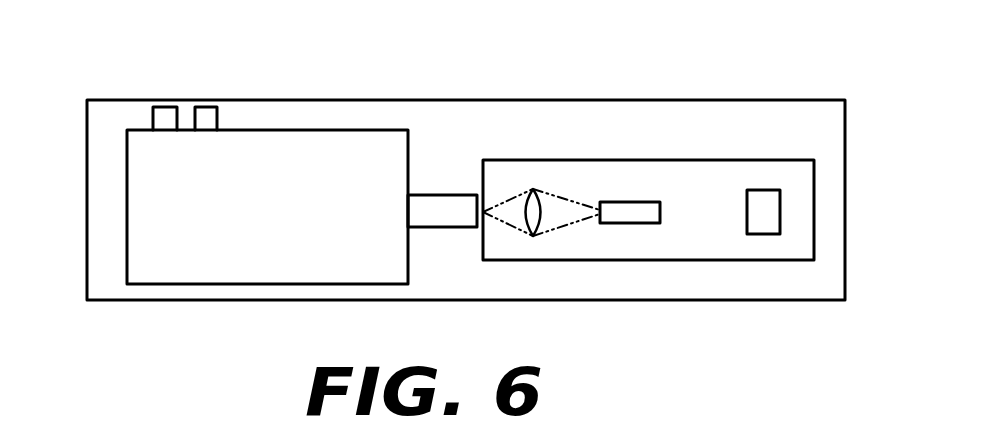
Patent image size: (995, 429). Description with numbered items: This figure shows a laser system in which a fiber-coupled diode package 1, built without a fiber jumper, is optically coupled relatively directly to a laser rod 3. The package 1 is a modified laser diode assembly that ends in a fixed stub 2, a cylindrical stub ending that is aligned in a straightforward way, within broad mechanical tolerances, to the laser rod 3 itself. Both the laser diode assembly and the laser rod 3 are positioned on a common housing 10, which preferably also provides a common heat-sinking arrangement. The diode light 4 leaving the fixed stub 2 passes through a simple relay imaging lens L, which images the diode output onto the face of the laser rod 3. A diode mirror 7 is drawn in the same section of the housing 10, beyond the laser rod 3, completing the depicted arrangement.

The fiber-coupled diode package without fiber jumper 1 is at (350, 130).
The fixed stub 2 is at (443, 195).
The laser rod 3 is at (613, 223).
The diode light 4 is at (570, 202).
The diode mirror 7 is at (773, 190).
The common housing 10 is at (280, 300).
The imaging lens L is at (533, 236).